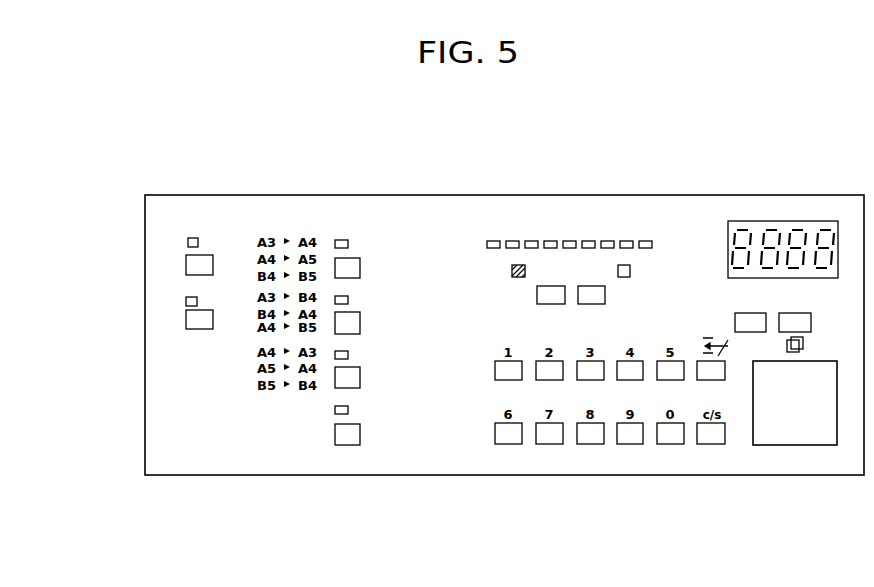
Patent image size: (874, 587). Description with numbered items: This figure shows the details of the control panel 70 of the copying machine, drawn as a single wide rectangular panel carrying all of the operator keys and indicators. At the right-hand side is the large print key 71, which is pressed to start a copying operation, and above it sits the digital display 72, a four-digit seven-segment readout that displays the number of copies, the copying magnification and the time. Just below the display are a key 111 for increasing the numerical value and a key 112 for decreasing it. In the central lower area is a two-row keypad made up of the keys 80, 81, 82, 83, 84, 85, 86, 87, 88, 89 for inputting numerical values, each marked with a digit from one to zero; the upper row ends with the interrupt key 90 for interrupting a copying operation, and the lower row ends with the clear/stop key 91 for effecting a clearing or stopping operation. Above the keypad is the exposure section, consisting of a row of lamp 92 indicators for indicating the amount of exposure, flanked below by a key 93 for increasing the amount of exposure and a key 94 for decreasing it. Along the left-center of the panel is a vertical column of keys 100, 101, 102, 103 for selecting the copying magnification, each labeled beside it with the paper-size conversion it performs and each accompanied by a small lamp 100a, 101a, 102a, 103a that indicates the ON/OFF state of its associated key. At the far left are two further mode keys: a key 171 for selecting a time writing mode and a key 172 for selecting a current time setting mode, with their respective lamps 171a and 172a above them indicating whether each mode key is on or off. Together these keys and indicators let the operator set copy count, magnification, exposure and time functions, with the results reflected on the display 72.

The operation panel 70 is at (238, 194).
The print key 71 is at (800, 440).
The digital display 72 is at (790, 281).
The numerical value key 80 is at (507, 374).
The numerical value key 81 is at (549, 374).
The numerical value key 82 is at (590, 374).
The numerical value key 83 is at (630, 374).
The numerical value key 84 is at (670, 374).
The numerical value key 85 is at (508, 444).
The numerical value key 86 is at (552, 444).
The numerical value key 87 is at (592, 444).
The numerical value key 88 is at (630, 444).
The numerical value key 89 is at (670, 444).
The interrupt key 90 is at (712, 374).
The clear/stop key 91 is at (712, 444).
The lamp 92 is at (573, 241).
The key 93 is at (603, 294).
The key 94 is at (541, 294).
The copying magnification key 100 is at (354, 262).
The lamp 100a is at (343, 240).
The copying magnification key 101 is at (361, 318).
The lamp 101a is at (349, 300).
The copying magnification key 102 is at (360, 370).
The lamp 102a is at (349, 353).
The copying magnification key 103 is at (361, 434).
The lamp 103a is at (349, 406).
The key 111 is at (737, 320).
The key 112 is at (811, 321).
The key 171 is at (178, 267).
The lamp 171a is at (178, 242).
The key 172 is at (183, 326).
The lamp 172a is at (178, 303).